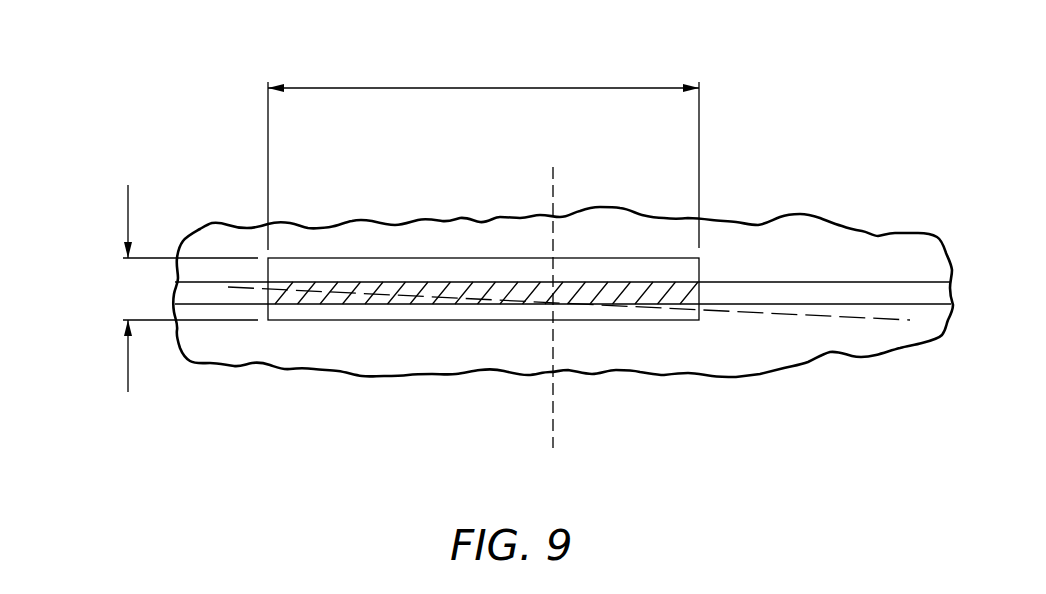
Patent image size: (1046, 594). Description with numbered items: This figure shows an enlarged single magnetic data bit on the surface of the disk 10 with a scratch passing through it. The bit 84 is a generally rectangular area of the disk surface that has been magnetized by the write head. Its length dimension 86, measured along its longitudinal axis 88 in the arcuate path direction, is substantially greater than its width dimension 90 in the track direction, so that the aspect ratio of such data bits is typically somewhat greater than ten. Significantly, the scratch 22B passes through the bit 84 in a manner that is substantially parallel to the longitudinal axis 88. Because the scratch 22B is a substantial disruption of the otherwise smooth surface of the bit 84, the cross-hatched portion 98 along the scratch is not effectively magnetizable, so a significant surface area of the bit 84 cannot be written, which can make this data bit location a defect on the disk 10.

The disk 10 is at (211, 224).
The scratch 22B is at (797, 291).
The bit 84 is at (364, 320).
The length dimension 86 is at (474, 88).
The longitudinal axis 88 is at (873, 321).
The width dimension 90 is at (128, 210).
The hatched etched region 98 is at (612, 292).